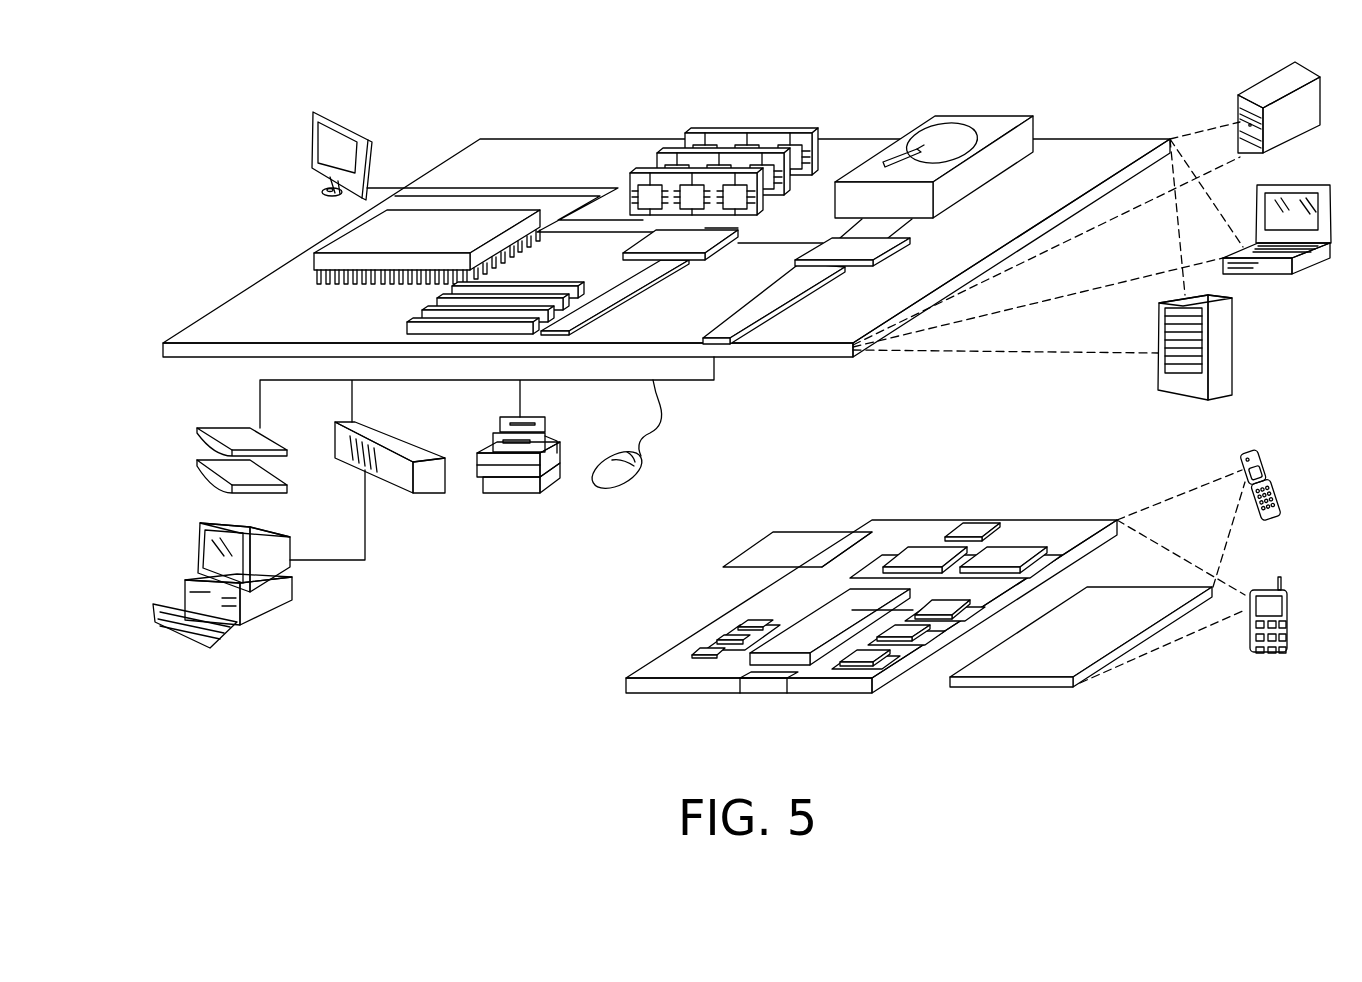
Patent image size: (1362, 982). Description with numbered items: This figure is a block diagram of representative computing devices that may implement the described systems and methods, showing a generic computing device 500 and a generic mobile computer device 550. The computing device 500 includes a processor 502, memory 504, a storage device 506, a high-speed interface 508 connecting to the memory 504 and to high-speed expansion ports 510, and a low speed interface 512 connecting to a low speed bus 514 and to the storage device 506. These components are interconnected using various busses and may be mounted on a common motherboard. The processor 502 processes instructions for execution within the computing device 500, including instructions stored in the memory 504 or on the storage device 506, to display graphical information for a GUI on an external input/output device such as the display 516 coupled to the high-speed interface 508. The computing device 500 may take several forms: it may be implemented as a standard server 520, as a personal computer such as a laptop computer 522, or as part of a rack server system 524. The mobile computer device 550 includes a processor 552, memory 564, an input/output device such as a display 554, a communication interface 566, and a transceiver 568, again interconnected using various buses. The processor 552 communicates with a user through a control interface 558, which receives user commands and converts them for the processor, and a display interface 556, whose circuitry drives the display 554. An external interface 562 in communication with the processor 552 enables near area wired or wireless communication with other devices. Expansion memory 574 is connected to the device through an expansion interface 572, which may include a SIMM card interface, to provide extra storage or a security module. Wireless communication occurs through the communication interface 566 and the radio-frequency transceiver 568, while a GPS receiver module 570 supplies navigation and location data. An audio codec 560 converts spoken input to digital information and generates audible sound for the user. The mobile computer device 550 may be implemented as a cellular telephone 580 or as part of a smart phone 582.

The computing device 500 is at (436, 90).
The processor 502 is at (338, 236).
The memory 504 is at (757, 137).
The storage device 506 is at (970, 115).
The high-speed interface 508 is at (692, 242).
The high-speed expansion ports 510 is at (437, 312).
The low speed interface 512 is at (824, 244).
The low speed bus 514 is at (720, 330).
The display 516 is at (312, 112).
The standard server 520 is at (1257, 88).
The laptop computer 522 is at (1308, 182).
The rack server system 524 is at (1235, 345).
The mobile computer device 550 is at (578, 703).
The processor 552 is at (800, 632).
The display 554 is at (1117, 600).
The display interface 556 is at (875, 655).
The control interface 558 is at (910, 630).
The audio codec 560 is at (948, 598).
The external interface 562 is at (765, 681).
The memory 564 is at (720, 637).
The communication interface 566 is at (925, 550).
The transceiver 568 is at (1010, 553).
The GPS receiver module 570 is at (973, 527).
The expansion interface 572 is at (856, 530).
The expansion memory 574 is at (775, 530).
The cellular telephone 580 is at (1252, 450).
The smart phone 582 is at (1265, 588).